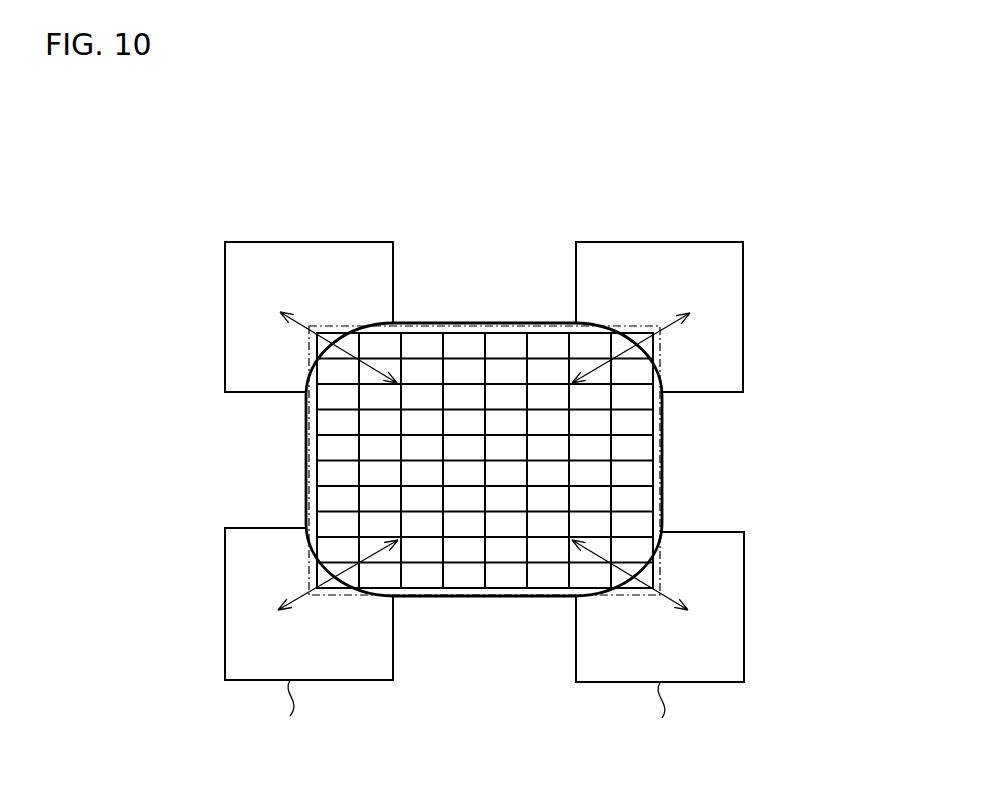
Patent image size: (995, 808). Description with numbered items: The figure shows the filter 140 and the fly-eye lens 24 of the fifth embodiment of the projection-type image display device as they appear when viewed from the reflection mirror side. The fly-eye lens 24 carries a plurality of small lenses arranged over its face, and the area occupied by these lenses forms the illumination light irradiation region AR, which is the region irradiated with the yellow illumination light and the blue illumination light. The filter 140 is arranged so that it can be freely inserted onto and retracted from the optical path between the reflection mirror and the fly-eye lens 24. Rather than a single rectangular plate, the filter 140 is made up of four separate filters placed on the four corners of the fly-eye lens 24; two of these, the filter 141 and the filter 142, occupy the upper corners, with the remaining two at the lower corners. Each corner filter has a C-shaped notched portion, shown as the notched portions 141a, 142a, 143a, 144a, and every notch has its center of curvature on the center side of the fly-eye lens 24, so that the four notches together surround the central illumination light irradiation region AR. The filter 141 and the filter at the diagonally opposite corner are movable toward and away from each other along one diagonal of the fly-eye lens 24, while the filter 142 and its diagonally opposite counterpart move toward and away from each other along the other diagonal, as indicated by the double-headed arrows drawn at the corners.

The fly-eye lens 24 is at (525, 323).
The illumination light irradiation region AR is at (470, 592).
The filter 140 is at (484, 450).
The filter 141 is at (309, 317).
The filter 142 is at (659, 317).
The C-shaped notched portion 141a is at (380, 343).
The C-shaped notched portion 142a is at (650, 372).
The C-shaped notched portion 143a is at (643, 566).
The C-shaped notched portion 144a is at (327, 566).